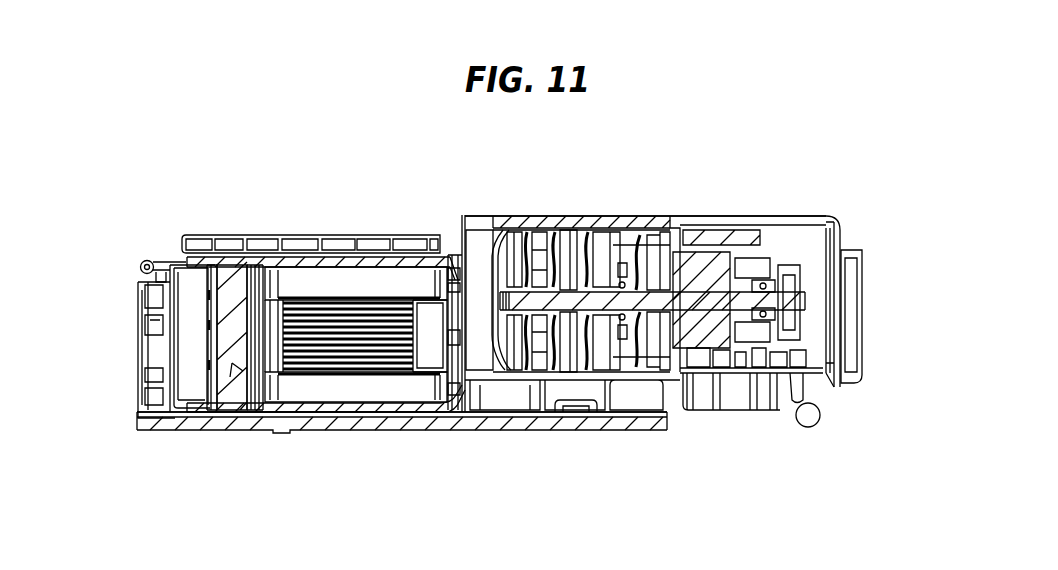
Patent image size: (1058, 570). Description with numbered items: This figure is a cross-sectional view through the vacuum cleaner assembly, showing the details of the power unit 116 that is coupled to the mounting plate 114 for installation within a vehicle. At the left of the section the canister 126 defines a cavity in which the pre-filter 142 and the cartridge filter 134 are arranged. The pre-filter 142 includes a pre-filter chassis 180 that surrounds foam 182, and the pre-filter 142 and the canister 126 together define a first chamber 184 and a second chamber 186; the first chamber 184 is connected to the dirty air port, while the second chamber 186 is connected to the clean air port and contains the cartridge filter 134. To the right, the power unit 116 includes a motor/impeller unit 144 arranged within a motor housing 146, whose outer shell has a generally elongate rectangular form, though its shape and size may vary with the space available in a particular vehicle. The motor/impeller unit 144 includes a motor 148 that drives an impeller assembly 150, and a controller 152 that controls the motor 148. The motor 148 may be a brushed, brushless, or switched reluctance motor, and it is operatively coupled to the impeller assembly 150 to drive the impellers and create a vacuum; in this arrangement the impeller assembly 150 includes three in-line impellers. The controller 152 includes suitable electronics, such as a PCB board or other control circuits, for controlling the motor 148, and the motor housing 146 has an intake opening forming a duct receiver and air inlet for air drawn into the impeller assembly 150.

The mounting plate 114 is at (453, 420).
The power unit 116 is at (639, 200).
The canister 126 is at (198, 408).
The cartridge filter 134 is at (365, 310).
The pre-filter 142 is at (232, 363).
The motor/impeller unit 144 is at (688, 267).
The motor housing 146 is at (742, 217).
The motor 148 is at (710, 335).
The impeller assembly 150 is at (553, 350).
The controller 152 is at (798, 270).
The pre-filter chassis 180 is at (208, 305).
The foam 182 is at (232, 303).
The first chamber 184 is at (348, 383).
The second chamber 186 is at (330, 285).